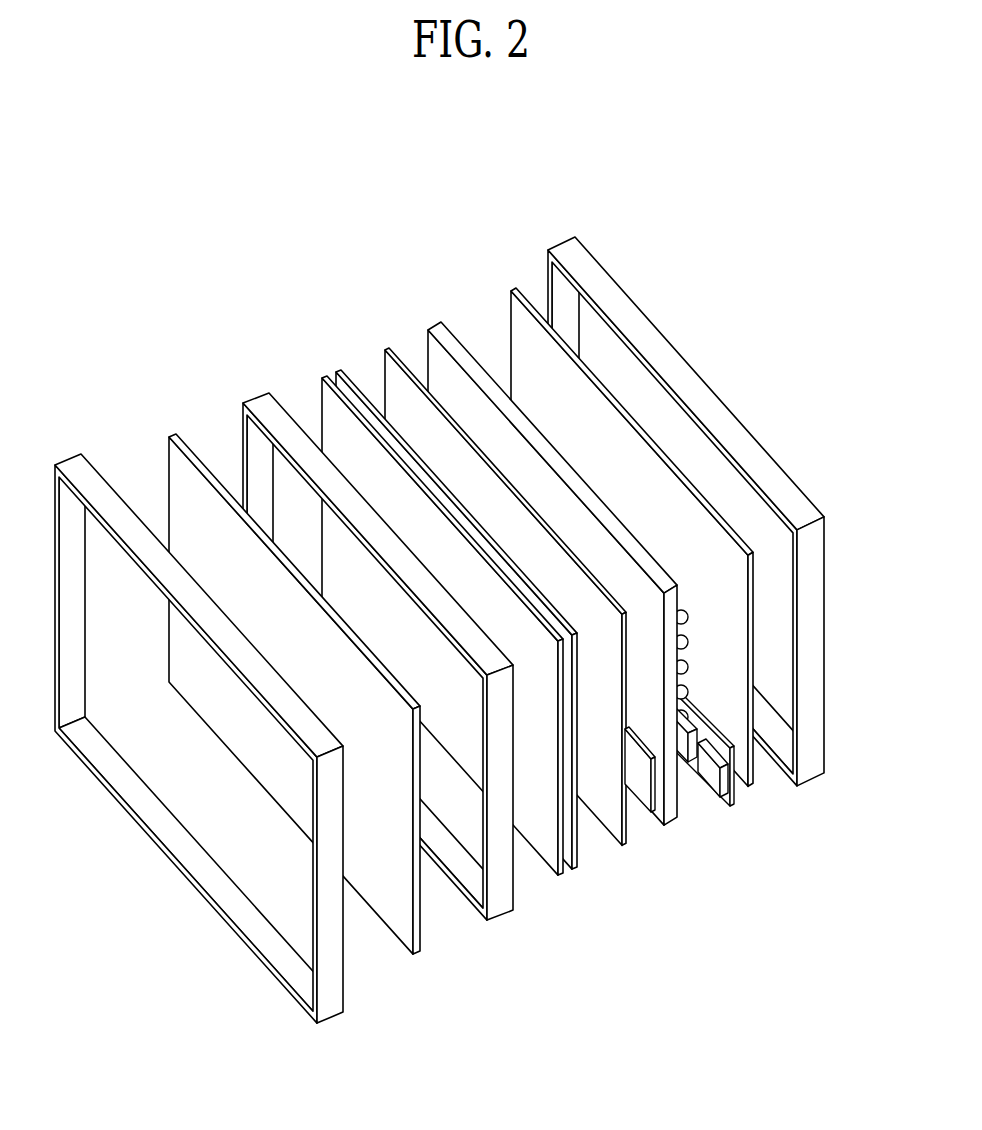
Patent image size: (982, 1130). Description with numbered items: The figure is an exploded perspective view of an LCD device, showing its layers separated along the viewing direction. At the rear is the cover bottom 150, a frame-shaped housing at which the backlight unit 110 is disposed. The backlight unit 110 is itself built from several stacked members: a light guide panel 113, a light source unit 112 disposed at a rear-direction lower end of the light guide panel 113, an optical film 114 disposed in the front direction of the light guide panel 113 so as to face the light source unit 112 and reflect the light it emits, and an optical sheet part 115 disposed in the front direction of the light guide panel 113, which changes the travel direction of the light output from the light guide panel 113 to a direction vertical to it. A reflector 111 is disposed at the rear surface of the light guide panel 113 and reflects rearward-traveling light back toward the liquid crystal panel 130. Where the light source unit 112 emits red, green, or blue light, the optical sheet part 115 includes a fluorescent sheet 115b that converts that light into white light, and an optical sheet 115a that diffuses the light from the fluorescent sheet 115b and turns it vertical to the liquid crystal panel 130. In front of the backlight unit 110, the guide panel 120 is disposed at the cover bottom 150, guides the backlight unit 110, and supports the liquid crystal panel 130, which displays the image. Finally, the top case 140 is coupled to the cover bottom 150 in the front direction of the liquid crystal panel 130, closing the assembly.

The backlight unit 110 is at (591, 640).
The reflector 111 is at (748, 770).
The light source unit 112 is at (728, 810).
The light guide panel 113 is at (678, 812).
The optical film 114 is at (622, 846).
The optical sheet part 115 is at (508, 677).
The optical sheet 115a is at (574, 870).
The fluorescent sheet 115b is at (643, 790).
The guide panel 120 is at (505, 917).
The liquid crystal panel 130 is at (421, 952).
The top case 140 is at (322, 1022).
The cover bottom 150 is at (817, 762).